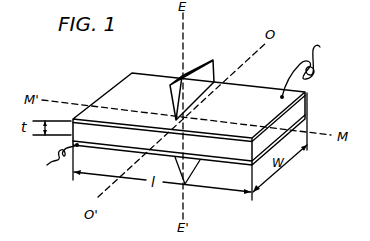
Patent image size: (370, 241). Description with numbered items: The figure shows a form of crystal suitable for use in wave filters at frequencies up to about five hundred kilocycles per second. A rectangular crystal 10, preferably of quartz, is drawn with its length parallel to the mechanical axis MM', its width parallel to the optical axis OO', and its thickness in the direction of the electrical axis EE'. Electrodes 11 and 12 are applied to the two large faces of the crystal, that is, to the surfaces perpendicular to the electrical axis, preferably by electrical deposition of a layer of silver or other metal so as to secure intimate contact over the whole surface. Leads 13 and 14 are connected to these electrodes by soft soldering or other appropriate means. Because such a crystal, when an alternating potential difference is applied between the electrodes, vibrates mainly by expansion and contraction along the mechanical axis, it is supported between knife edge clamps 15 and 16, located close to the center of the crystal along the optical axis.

The rectangular crystal 10 is at (302, 112).
The electrode 11 is at (242, 166).
The electrode 12 is at (237, 130).
The lead 13 is at (54, 161).
The lead 14 is at (316, 56).
The knife edge clamp 15 is at (212, 59).
The knife edge clamp 16 is at (181, 185).